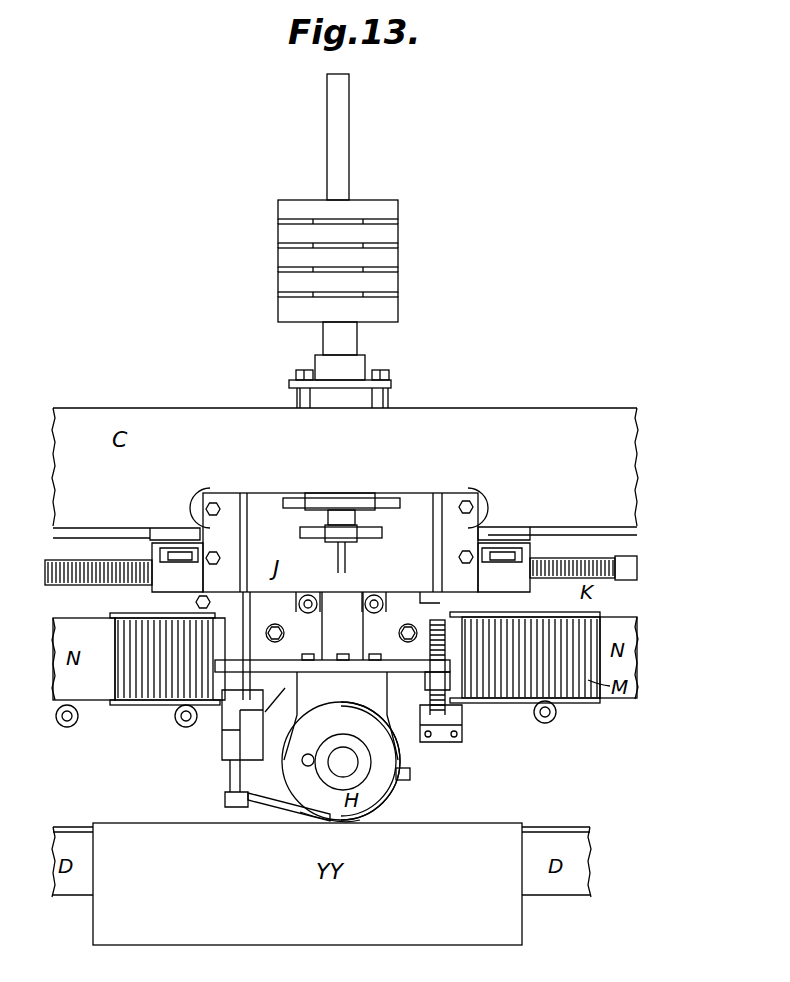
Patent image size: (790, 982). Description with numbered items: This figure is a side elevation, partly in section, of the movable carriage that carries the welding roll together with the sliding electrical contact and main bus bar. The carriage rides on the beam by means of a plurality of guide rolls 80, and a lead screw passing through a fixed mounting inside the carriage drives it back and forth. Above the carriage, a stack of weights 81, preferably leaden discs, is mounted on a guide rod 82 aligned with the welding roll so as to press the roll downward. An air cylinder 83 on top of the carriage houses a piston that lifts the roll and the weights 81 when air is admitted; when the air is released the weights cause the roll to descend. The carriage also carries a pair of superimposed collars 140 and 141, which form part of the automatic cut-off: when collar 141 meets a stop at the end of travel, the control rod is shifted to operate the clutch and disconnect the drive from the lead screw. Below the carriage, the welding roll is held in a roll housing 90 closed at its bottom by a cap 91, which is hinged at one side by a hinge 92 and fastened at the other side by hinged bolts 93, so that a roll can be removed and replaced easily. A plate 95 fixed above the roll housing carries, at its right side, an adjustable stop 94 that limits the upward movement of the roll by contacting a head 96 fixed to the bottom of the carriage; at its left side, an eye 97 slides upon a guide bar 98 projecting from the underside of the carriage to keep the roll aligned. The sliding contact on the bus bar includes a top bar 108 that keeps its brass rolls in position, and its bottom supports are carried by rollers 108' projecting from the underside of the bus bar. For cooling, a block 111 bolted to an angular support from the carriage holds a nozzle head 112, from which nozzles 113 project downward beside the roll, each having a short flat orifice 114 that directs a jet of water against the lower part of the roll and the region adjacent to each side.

The rod 82 is at (344, 146).
The weights 81 is at (398, 218).
The air cylinder 83 is at (340, 366).
The guide rolls 80 is at (205, 500).
The collar 140 is at (340, 500).
The collar 141 is at (352, 541).
The top bar 108 is at (350, 587).
The guide bar 98 is at (268, 592).
The adjustable stop 94 is at (440, 592).
The head 96 is at (450, 597).
The plate 95 is at (262, 666).
The eye 97 is at (242, 687).
The roll housing 90 is at (341, 746).
The cap 91 is at (350, 742).
The hinge 92 is at (302, 762).
The hinged bolts 93 is at (402, 778).
The block 111 is at (247, 725).
The nozzle head 112 is at (222, 783).
The nozzles 113 is at (286, 812).
The orifice 114 is at (345, 820).
The rollers 108' is at (327, 728).